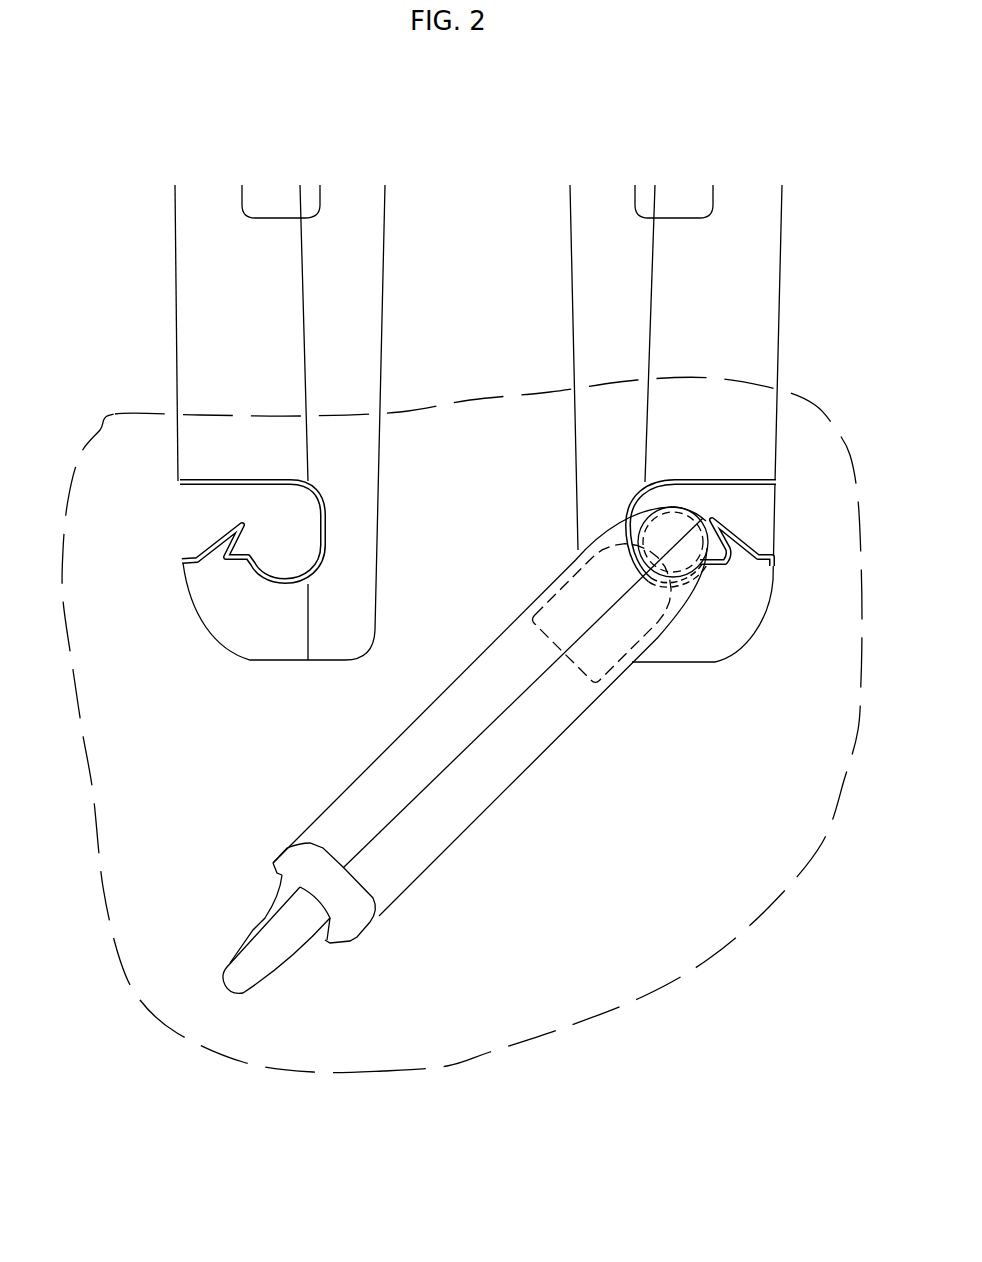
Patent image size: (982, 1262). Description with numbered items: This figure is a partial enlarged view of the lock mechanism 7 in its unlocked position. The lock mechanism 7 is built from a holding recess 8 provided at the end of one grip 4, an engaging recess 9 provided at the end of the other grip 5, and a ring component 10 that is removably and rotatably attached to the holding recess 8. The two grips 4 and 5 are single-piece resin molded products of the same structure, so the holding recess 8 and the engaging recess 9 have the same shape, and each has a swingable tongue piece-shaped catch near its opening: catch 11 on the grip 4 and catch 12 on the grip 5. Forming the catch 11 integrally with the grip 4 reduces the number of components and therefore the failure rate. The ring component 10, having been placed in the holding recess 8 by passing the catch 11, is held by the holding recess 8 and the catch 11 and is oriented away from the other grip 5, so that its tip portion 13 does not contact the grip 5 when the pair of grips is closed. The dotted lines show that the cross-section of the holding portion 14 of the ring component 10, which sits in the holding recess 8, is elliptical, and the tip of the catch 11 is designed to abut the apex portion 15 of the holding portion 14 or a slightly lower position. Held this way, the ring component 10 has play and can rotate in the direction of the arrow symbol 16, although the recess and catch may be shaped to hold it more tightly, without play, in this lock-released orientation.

The grip 4 is at (778, 365).
The grip 5 is at (175, 388).
The lock mechanism 7 is at (462, 674).
The holding recess 8 is at (664, 519).
The engaging recess 9 is at (206, 572).
The ring component 10 is at (419, 750).
The catch 11 is at (727, 530).
The catch 12 is at (232, 530).
The tip portion 13 is at (263, 955).
The holding portion 14 is at (663, 532).
The apex portion 15 is at (708, 508).
The arrow symbol 16 is at (304, 1051).